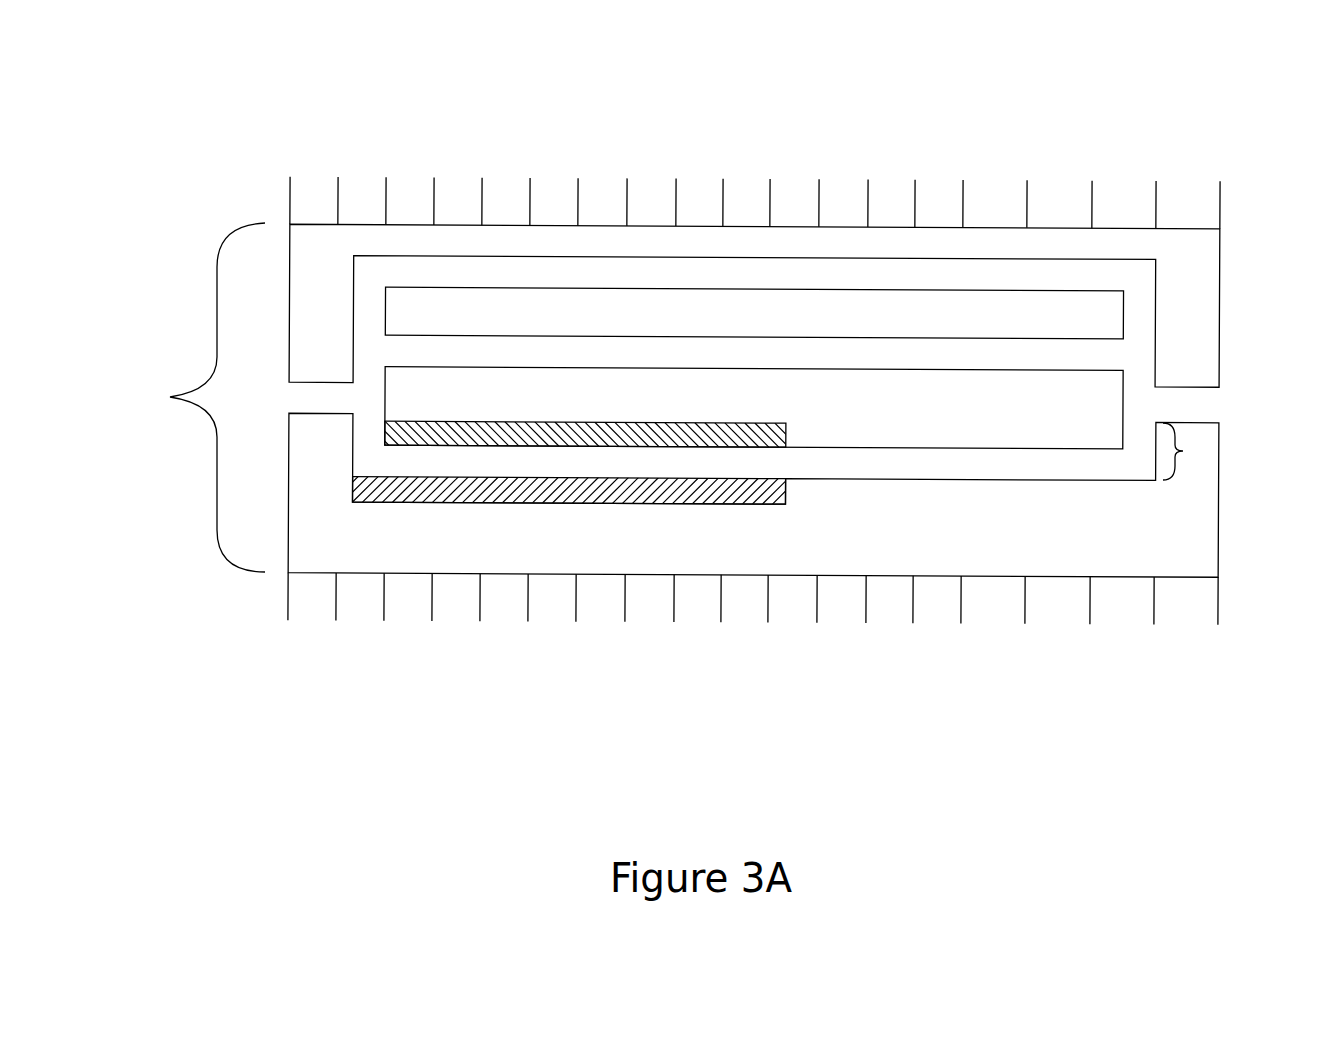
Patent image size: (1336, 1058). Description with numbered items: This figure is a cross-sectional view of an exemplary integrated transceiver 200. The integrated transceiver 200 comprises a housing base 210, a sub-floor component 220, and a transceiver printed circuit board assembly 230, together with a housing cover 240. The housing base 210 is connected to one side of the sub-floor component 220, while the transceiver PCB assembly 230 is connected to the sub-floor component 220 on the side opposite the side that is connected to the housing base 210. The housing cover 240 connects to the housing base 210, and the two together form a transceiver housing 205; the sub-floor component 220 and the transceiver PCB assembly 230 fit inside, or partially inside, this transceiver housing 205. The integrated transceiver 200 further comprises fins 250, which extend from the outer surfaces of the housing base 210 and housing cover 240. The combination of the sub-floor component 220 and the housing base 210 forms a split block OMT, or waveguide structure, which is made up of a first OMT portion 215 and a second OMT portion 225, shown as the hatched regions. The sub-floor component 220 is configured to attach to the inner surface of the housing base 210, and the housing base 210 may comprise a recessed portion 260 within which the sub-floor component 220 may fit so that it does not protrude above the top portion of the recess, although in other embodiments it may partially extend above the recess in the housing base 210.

The integrated transceiver 200 is at (1222, 90).
The transceiver housing 205 is at (196, 397).
The housing base 210 is at (1228, 515).
The first portion of the split block OMT 215 is at (787, 488).
The sub-floor component 220 is at (948, 418).
The second portion of the split block OMT 225 is at (723, 422).
The transceiver printed circuit board assembly 230 is at (833, 324).
The housing cover 240 is at (1230, 277).
The fins 250 is at (488, 161).
The recessed portion 260 is at (1187, 451).